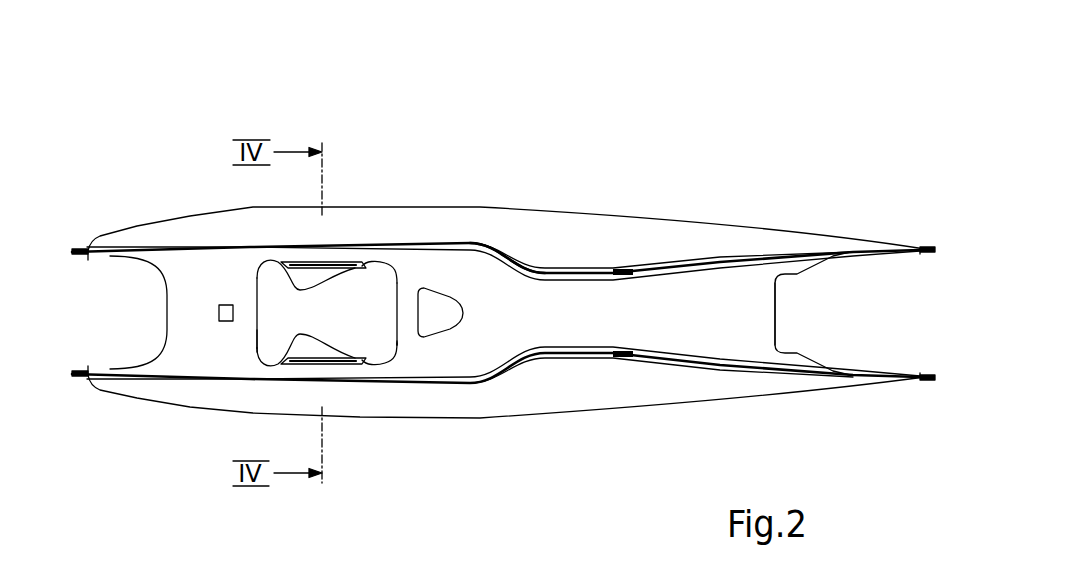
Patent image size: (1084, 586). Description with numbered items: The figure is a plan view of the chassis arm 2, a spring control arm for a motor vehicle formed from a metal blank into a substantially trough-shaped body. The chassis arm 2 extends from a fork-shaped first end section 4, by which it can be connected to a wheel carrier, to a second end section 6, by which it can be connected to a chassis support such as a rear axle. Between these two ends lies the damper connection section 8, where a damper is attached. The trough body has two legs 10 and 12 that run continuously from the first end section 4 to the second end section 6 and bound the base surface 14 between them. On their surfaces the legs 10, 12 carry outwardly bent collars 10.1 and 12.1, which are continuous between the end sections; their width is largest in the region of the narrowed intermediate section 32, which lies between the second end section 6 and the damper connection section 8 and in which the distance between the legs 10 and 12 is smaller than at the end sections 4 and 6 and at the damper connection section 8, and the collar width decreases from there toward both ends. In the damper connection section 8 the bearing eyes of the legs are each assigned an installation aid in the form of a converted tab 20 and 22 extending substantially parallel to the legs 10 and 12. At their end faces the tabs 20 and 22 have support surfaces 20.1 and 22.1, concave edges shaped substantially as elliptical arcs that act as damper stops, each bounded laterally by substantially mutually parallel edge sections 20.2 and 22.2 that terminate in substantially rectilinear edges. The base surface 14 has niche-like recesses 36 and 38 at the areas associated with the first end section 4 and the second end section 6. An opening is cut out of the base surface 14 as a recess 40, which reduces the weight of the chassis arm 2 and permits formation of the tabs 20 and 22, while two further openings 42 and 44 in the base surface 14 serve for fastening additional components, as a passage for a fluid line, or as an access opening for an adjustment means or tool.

The chassis arm 2 is at (560, 80).
The first end section 4 is at (117, 192).
The second end section 6 is at (898, 206).
The damper connection section 8 is at (351, 202).
The leg 10 is at (601, 236).
The collar 10.1 is at (505, 226).
The leg 12 is at (591, 390).
The collar 12.1 is at (520, 395).
The base surface 14 is at (685, 310).
The tab 20 is at (401, 295).
The support surface 20.1 is at (291, 266).
The edge section 20.2 is at (290, 263).
The tab 22 is at (358, 340).
The support surface 22.1 is at (255, 358).
The edge section 22.2 is at (313, 367).
The narrowed intermediate section 32 is at (529, 245).
The niche-like recess 36 is at (84, 321).
The niche-like recess 38 is at (912, 320).
The recess 40 is at (375, 342).
The opening 42 is at (219, 313).
The opening 44 is at (440, 316).